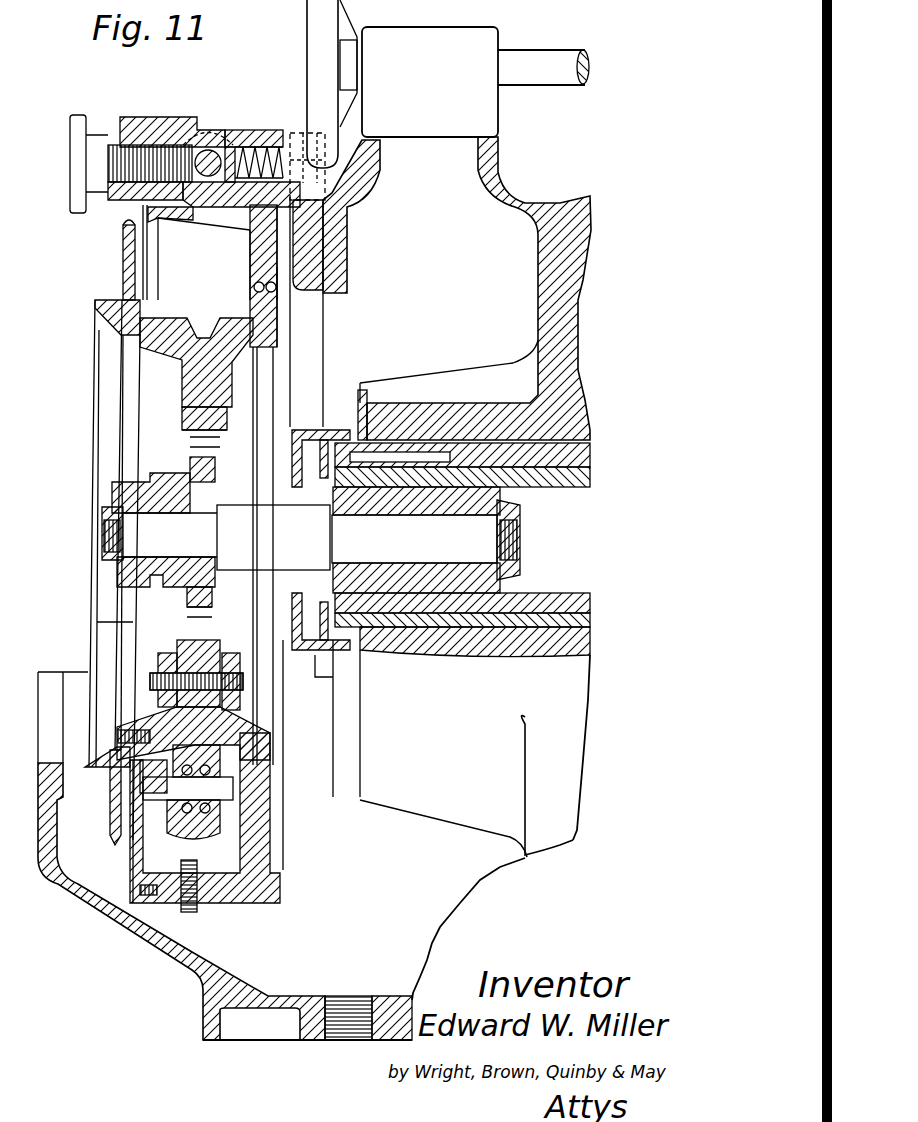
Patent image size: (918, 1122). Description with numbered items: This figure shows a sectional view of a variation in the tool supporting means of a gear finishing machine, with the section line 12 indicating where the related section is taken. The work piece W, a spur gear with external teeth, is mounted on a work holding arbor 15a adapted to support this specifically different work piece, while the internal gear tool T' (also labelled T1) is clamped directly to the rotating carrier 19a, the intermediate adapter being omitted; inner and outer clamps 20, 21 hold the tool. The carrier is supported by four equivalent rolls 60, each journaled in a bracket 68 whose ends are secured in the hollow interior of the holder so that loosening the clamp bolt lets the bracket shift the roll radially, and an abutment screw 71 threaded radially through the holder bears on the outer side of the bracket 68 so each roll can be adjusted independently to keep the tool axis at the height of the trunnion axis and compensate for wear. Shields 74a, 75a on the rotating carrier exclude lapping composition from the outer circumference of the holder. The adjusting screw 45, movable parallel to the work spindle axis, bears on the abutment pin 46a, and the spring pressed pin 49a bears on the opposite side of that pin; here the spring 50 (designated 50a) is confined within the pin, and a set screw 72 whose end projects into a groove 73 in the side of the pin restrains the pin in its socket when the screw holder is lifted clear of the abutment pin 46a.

The adjusting screw 45 is at (130, 192).
The abutment pin 46a is at (206, 150).
The spring pressed pin 49a is at (232, 172).
The spring 50 is at (240, 185).
The spring 50a is at (316, 91).
The groove 73 is at (208, 195).
The set screw 72 is at (247, 205).
The rotating carrier 19a is at (190, 383).
The tool T' is at (187, 422).
The thrust member T1 is at (172, 420).
The work piece W is at (189, 470).
The work holding arbor 15a is at (118, 578).
The inner clamp 20 is at (162, 652).
The outer clamp 21 is at (230, 652).
The shield 75a is at (255, 757).
The roll 60 is at (222, 828).
The bracket 68 is at (232, 843).
The shield 74a is at (112, 793).
The abutment screw 71 is at (192, 913).
The section line 12- 12 is at (205, 298).